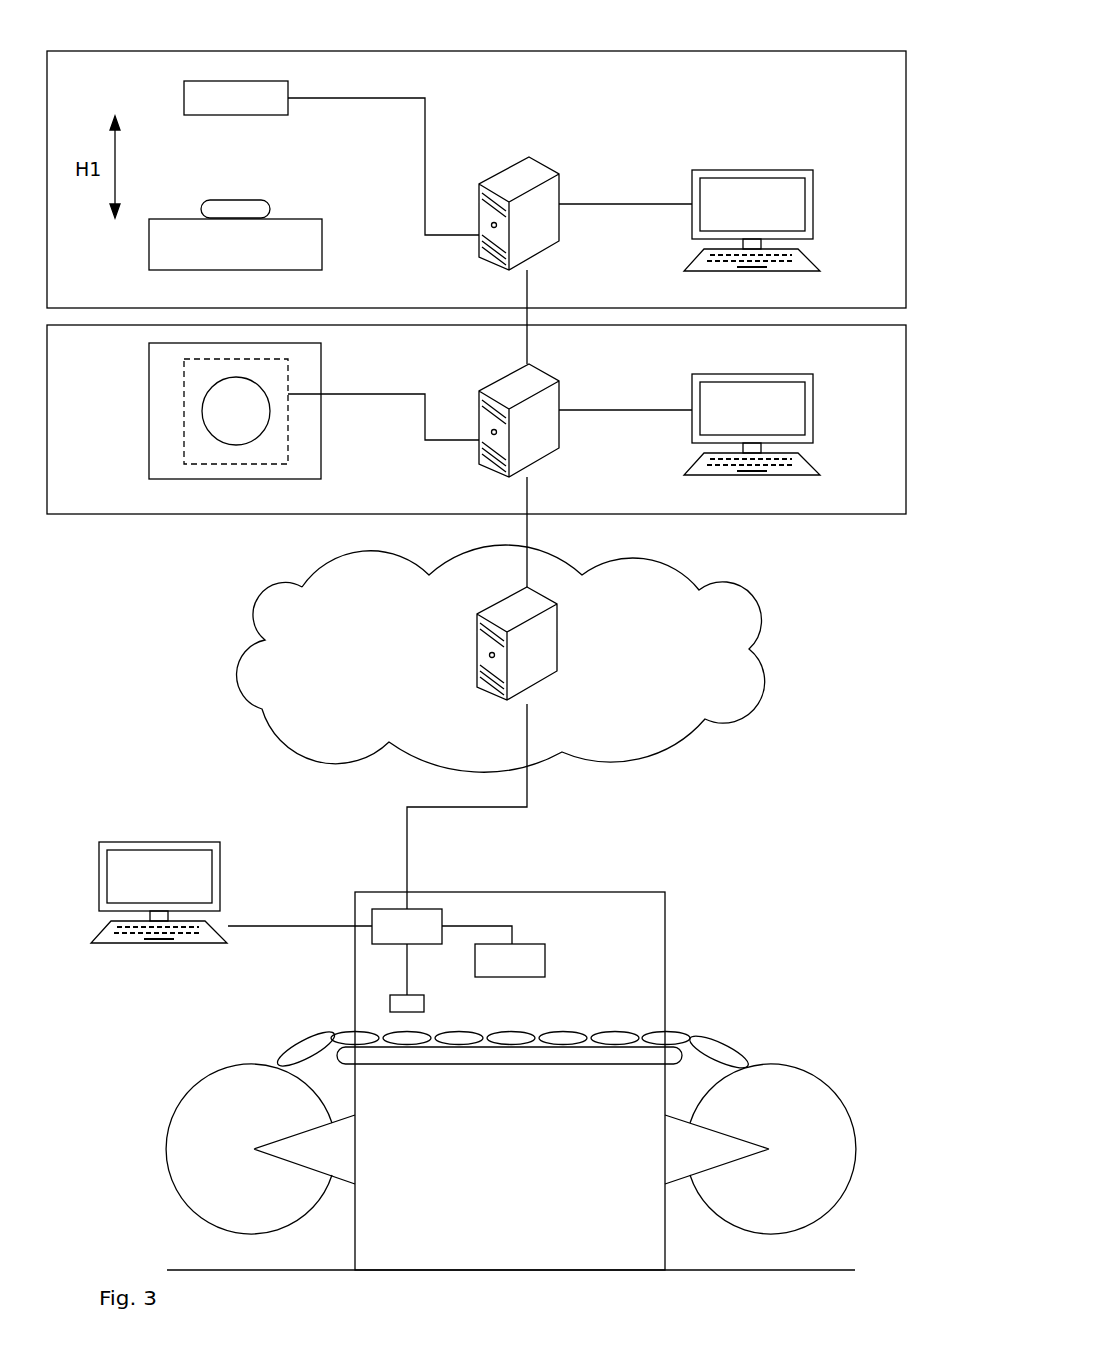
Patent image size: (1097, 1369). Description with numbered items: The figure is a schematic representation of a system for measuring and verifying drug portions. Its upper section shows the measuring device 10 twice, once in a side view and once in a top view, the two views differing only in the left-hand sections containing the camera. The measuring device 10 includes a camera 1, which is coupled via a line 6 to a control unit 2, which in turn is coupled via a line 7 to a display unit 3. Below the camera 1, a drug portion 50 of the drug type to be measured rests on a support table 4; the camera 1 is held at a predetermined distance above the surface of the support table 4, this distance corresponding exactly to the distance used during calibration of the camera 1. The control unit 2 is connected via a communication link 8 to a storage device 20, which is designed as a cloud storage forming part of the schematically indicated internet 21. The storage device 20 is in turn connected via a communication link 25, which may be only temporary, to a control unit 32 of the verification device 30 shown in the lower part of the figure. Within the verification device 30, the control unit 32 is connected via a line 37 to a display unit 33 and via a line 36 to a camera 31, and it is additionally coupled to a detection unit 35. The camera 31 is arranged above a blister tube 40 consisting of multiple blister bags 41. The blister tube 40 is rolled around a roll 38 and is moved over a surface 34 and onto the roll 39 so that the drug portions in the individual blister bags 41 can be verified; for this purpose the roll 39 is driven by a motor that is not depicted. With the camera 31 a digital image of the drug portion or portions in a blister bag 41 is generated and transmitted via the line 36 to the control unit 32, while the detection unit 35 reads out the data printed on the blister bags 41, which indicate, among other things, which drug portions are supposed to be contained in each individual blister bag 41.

The camera 1 is at (233, 83).
The control unit 2 is at (525, 170).
The display unit 3 is at (750, 168).
The support table 4 is at (303, 237).
The line 6 is at (355, 98).
The line 7 is at (645, 203).
The communication link 8 is at (527, 290).
The measuring device 10 is at (904, 187).
The storage device 20 is at (540, 660).
The internet 21 is at (773, 700).
The communication link 25 is at (405, 835).
The verification device 30 is at (665, 918).
The camera 31 is at (528, 940).
The control unit 32 is at (422, 922).
The display unit 33 is at (158, 840).
The surface 34 is at (527, 1057).
The detection unit 35 is at (388, 1005).
The line 36 is at (478, 924).
The line 37 is at (268, 924).
The roll 38 is at (188, 1142).
The roll 39 is at (805, 1140).
The blister tube 40 is at (668, 1028).
The blister bags 41 is at (308, 1040).
The drug portion 50 is at (236, 203).